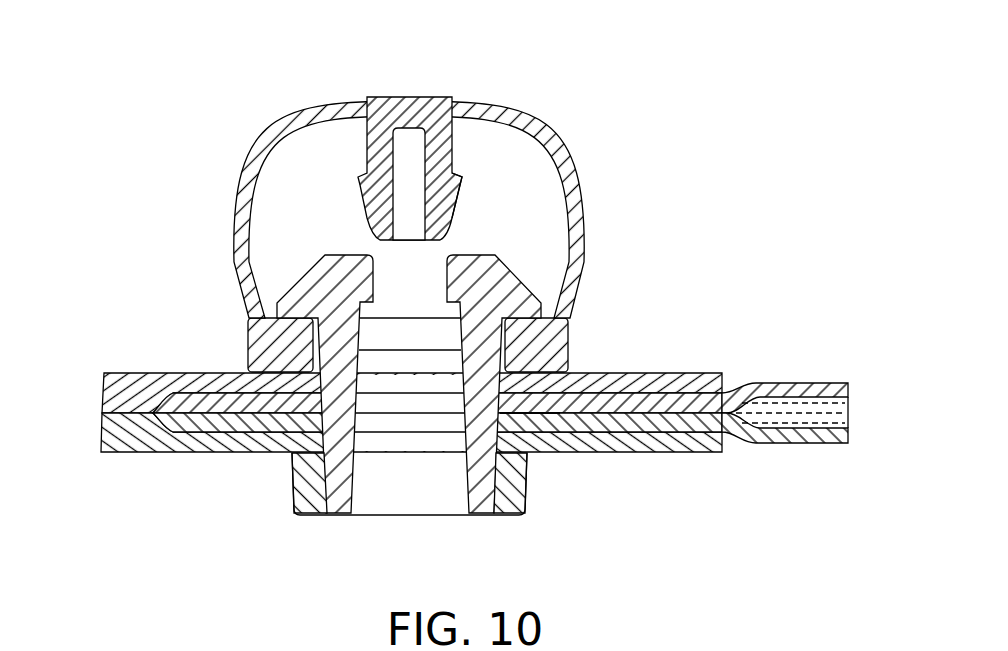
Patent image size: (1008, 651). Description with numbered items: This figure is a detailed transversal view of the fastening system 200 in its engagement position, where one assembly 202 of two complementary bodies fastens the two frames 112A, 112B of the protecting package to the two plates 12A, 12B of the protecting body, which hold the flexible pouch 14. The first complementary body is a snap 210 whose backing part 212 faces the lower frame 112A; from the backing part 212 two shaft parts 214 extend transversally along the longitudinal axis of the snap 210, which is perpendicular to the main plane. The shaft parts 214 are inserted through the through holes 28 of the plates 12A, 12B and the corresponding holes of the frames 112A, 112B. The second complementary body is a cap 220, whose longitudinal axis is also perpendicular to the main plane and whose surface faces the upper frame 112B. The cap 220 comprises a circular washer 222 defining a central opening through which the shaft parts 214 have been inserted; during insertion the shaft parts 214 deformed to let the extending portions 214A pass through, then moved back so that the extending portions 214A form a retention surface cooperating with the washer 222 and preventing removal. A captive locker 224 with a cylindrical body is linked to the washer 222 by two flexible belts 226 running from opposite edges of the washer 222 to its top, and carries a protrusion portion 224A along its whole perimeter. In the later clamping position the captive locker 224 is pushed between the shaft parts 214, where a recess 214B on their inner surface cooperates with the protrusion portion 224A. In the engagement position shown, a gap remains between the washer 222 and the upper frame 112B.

The fastening system 200 is at (475, 289).
The assembly 202 is at (461, 191).
The snap 210 is at (291, 505).
The backing part 212 is at (410, 495).
The shaft parts 214 is at (399, 362).
The extending portion 214A is at (511, 303).
The recess 214B is at (352, 290).
The cap 220 is at (504, 121).
The washer 222 is at (523, 343).
The captive locker 224 is at (403, 140).
The protrusion portion 224A is at (462, 181).
The belts 226 is at (276, 132).
The lower frame 112A is at (133, 453).
The upper frame 112B is at (124, 388).
The plate 12A is at (230, 423).
The plate 12B is at (208, 403).
The flexible pouch 14 is at (838, 413).
The through holes 28 is at (505, 428).